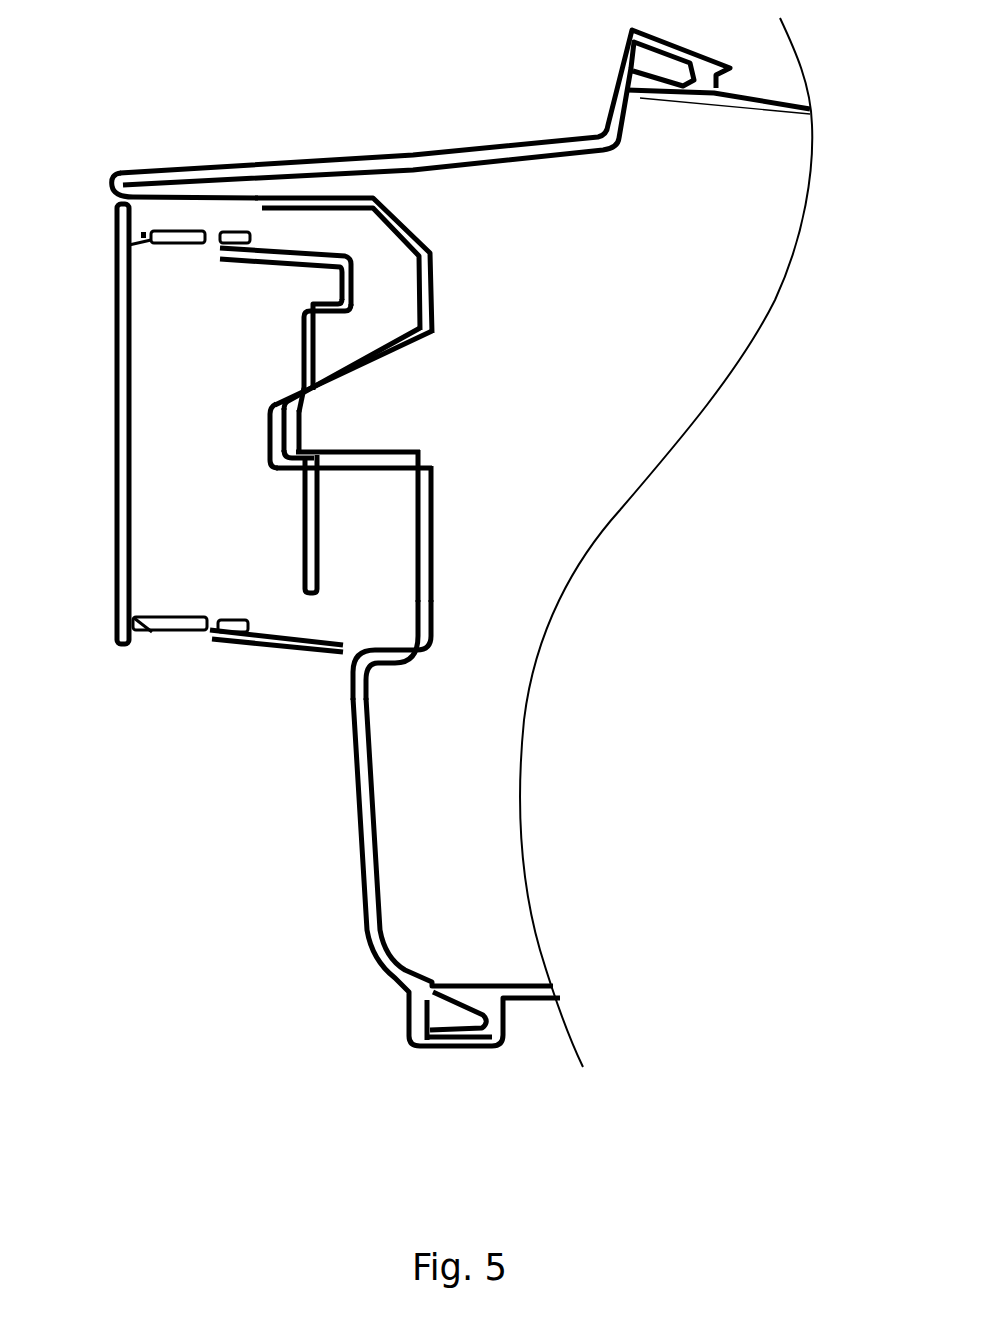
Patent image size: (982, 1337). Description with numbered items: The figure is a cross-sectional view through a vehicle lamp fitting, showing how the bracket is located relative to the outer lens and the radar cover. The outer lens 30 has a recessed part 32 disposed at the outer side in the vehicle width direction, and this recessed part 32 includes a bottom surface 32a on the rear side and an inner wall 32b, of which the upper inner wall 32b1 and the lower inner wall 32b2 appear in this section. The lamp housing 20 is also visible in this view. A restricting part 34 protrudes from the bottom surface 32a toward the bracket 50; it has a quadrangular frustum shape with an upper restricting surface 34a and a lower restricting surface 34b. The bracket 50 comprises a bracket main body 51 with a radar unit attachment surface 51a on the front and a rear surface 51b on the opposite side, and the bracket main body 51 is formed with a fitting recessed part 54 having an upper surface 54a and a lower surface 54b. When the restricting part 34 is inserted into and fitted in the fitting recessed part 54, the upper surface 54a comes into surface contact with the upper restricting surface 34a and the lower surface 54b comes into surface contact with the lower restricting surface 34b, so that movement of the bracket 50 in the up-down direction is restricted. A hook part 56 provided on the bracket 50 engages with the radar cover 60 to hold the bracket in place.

The lamp housing 20 is at (771, 101).
The outer lens 30 is at (522, 150).
The recessed part 32 is at (220, 398).
The bottom surface 32a is at (408, 532).
The inner wall 32b is at (289, 431).
The upper inner wall 32b1 is at (176, 205).
The lower inner wall 32b2 is at (390, 655).
The restricting part 34 is at (386, 417).
The upper restricting surface 34a is at (387, 354).
The lower restricting surface 34b is at (372, 475).
The bracket 50 is at (292, 467).
The bracket main body 51 is at (310, 446).
The radar unit attachment surface 51a is at (301, 553).
The rear surface 51b is at (321, 553).
The fitting recessed part 54 is at (247, 433).
The upper surface 54a is at (313, 408).
The lower surface 54b is at (296, 455).
The hook part 56 is at (228, 258).
The radar cover 60 is at (114, 396).